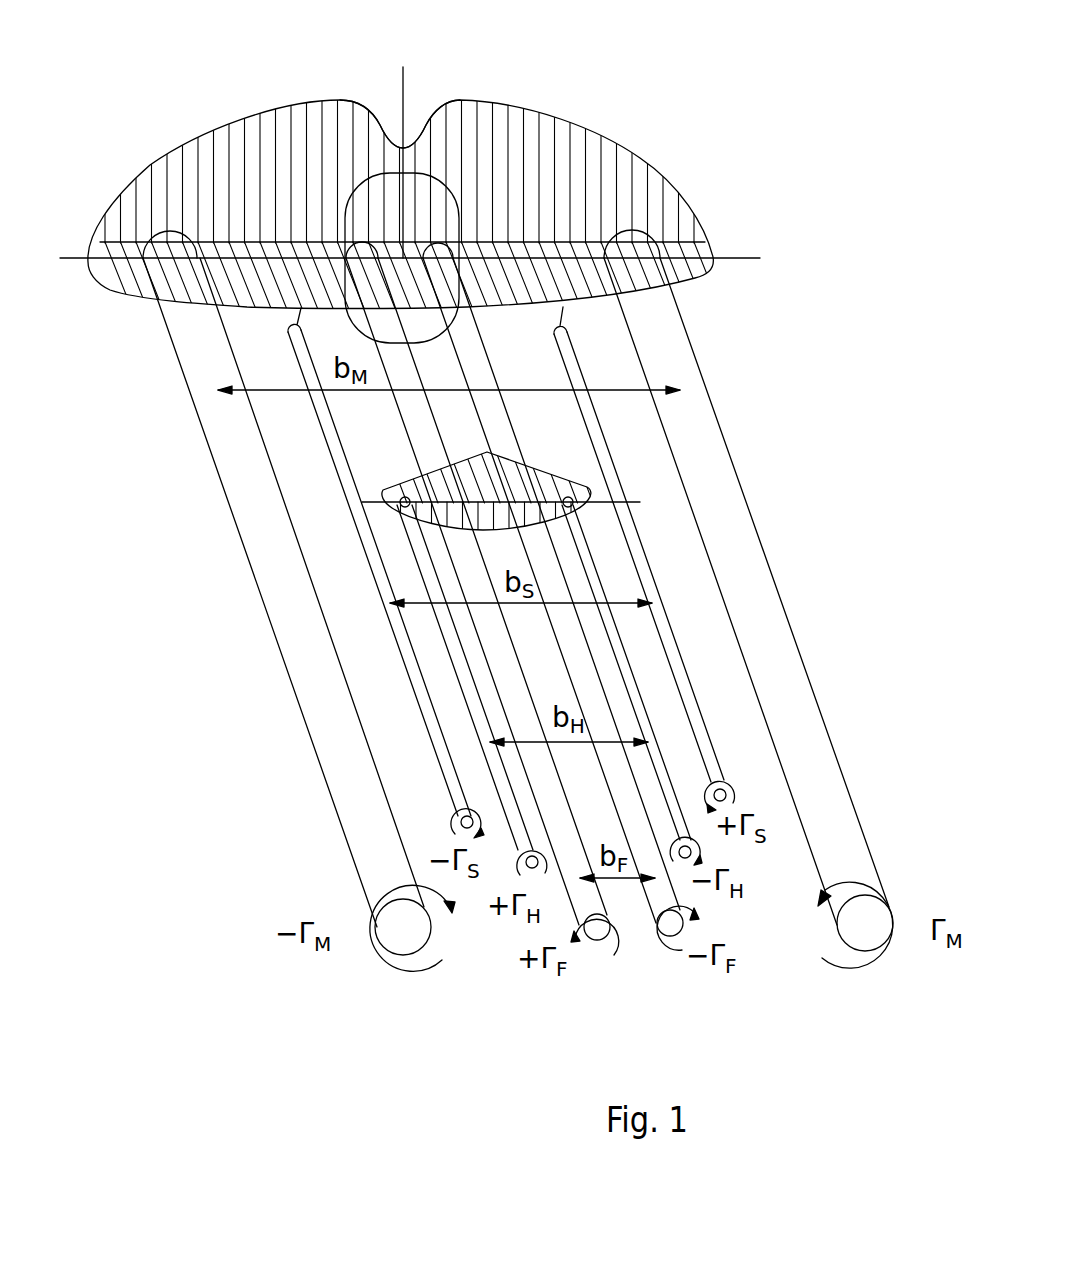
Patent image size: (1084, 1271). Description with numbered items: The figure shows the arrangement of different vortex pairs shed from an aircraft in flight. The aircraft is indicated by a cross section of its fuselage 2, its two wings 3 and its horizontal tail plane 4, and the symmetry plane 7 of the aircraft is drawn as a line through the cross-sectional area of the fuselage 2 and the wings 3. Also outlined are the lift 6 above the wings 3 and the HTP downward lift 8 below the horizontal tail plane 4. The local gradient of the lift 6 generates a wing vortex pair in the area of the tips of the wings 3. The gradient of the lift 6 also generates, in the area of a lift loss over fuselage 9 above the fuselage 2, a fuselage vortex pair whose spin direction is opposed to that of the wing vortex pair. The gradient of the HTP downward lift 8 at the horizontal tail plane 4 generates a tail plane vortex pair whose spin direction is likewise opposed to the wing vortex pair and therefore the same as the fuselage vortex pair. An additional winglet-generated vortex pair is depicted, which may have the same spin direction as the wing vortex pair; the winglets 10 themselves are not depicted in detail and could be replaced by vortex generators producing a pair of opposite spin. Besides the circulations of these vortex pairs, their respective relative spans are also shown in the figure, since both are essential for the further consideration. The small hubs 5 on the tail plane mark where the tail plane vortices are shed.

The fuselage 2 is at (450, 193).
The wings 3 is at (683, 277).
The horizontal tail plane 4 is at (593, 484).
The stabilizer rotor hubs 5 is at (640, 502).
The lift 6 is at (192, 173).
The symmetry plane 7 is at (403, 70).
The HTP downward lift 8 is at (420, 525).
The lift loss over fuselage 9 is at (418, 118).
The winglets 10 is at (300, 318).